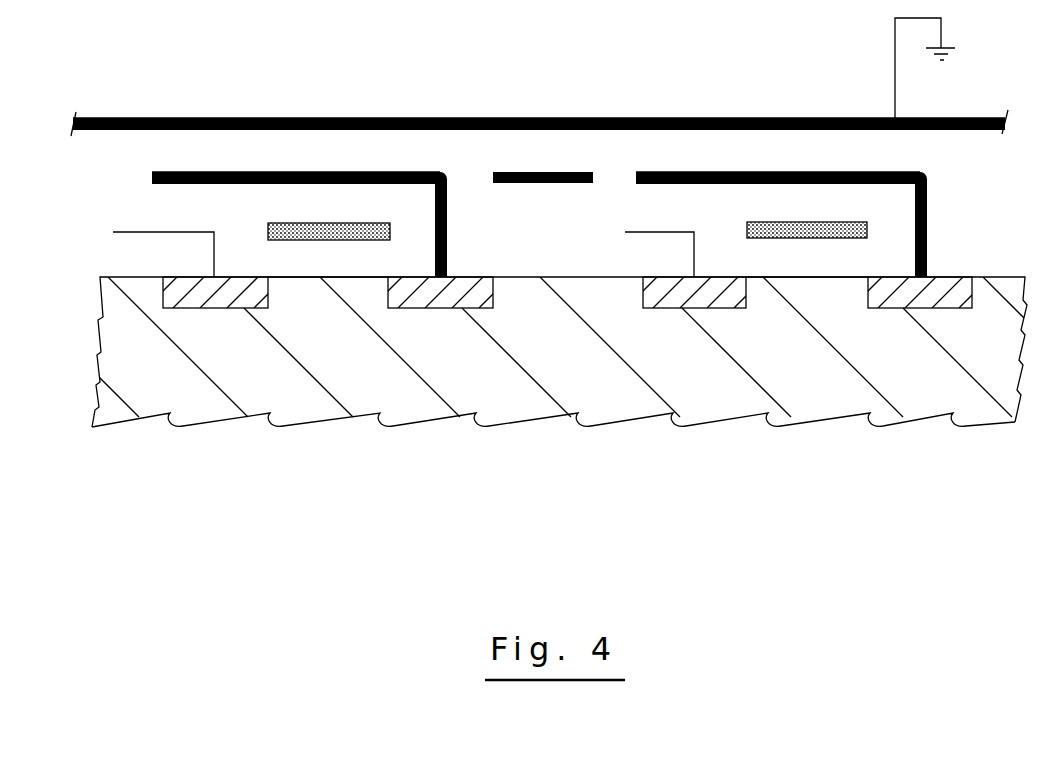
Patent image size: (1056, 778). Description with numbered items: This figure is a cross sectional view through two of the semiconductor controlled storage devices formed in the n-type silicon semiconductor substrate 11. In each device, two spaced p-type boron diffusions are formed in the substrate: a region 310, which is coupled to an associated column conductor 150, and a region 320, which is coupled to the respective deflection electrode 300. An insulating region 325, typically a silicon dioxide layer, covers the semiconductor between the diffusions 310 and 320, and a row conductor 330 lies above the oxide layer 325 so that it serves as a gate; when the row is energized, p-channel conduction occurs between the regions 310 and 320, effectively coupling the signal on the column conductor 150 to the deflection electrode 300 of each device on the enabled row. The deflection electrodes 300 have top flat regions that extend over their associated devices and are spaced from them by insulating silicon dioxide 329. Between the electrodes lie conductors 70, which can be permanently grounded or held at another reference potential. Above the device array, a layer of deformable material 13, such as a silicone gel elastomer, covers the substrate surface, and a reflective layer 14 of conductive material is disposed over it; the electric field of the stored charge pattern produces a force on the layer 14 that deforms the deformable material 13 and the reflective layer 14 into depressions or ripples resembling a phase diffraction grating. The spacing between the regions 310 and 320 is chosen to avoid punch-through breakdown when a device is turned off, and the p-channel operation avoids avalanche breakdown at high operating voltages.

The semiconductor substrate 11 is at (238, 439).
The layer of deformable material 13 is at (360, 146).
The reflective layer 14 is at (437, 119).
The conductors 70 is at (524, 172).
The column conductors 150 is at (374, 243).
The deflection electrodes 300 is at (360, 184).
The p-type diffusion region 310 is at (221, 308).
The p-type diffusion region 320 is at (436, 308).
The insulating region 325 is at (311, 266).
The insulating material 329 is at (278, 200).
The row conductors 330 is at (268, 224).